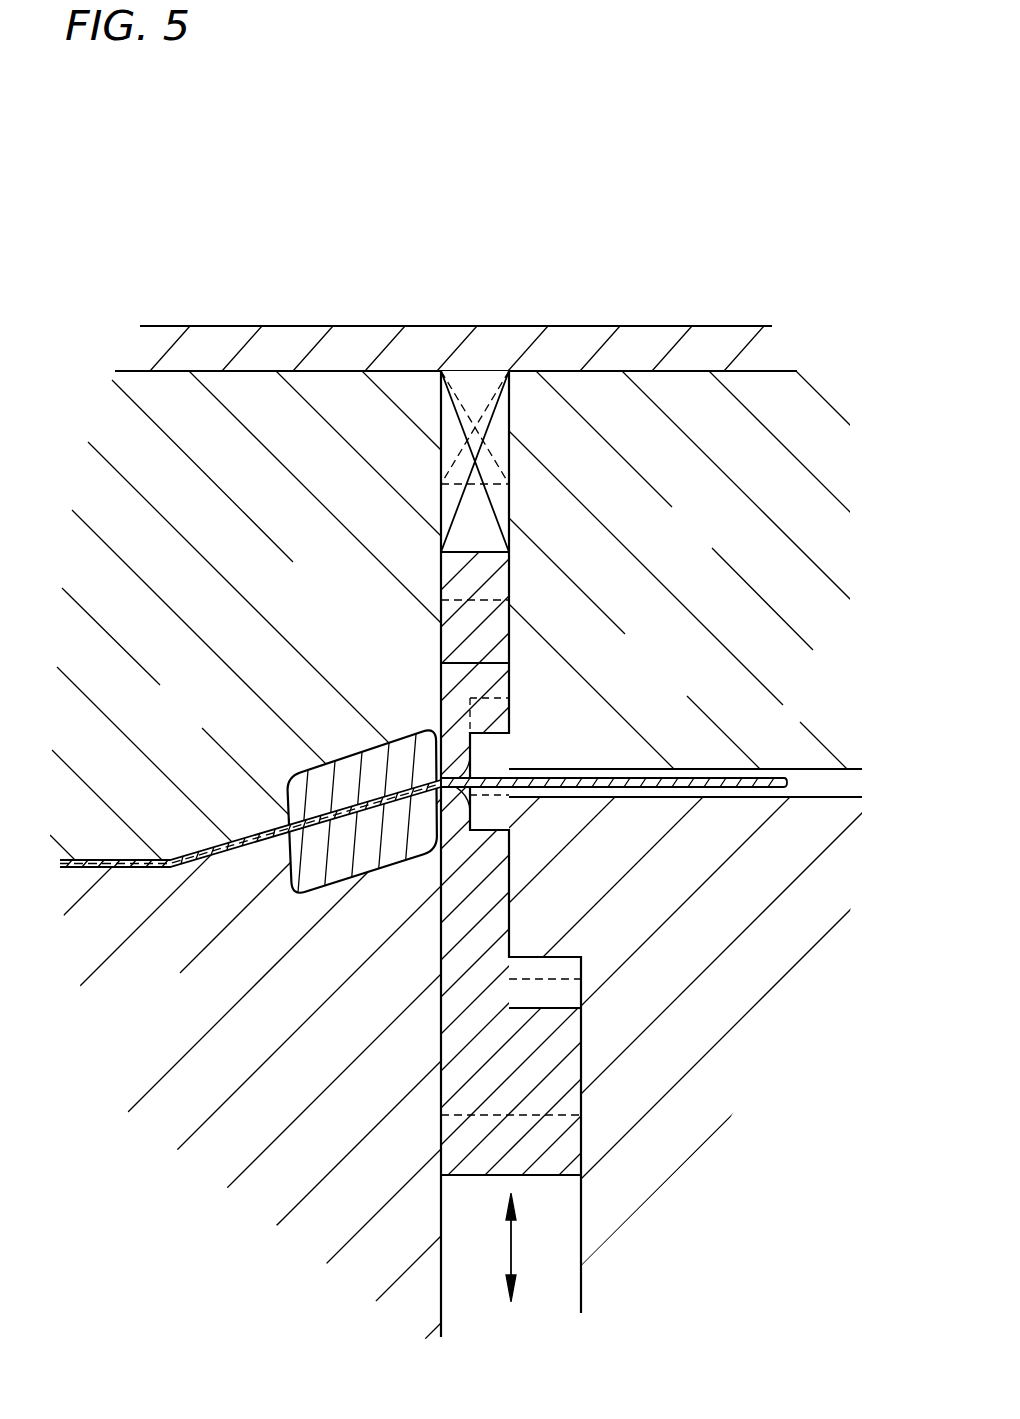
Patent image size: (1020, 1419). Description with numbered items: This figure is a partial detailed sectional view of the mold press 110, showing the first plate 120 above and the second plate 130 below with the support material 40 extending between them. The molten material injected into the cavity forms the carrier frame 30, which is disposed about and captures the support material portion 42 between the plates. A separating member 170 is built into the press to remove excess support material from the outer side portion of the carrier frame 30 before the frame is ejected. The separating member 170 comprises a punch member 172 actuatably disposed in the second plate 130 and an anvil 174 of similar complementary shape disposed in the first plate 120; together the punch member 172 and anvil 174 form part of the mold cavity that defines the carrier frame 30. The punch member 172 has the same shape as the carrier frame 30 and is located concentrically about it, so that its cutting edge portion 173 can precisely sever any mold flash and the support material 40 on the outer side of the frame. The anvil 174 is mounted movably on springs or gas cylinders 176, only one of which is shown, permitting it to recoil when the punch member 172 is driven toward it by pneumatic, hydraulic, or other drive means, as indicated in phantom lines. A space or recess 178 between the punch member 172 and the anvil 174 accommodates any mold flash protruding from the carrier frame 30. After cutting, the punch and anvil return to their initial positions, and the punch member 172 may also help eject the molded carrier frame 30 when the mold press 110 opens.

The mold press 110 is at (683, 285).
The first plate 120 is at (805, 448).
The second plate 130 is at (648, 1233).
The separating member 170 is at (522, 783).
The punch member 172 is at (538, 1080).
The cutting edge portion 173 is at (440, 786).
The anvil 174 is at (437, 647).
The springs or gas cylinders 176 is at (510, 457).
The space or recess 178 is at (510, 758).
The carrier frame 30 is at (285, 783).
The support material 40 is at (680, 780).
The support material portion 42 is at (232, 862).